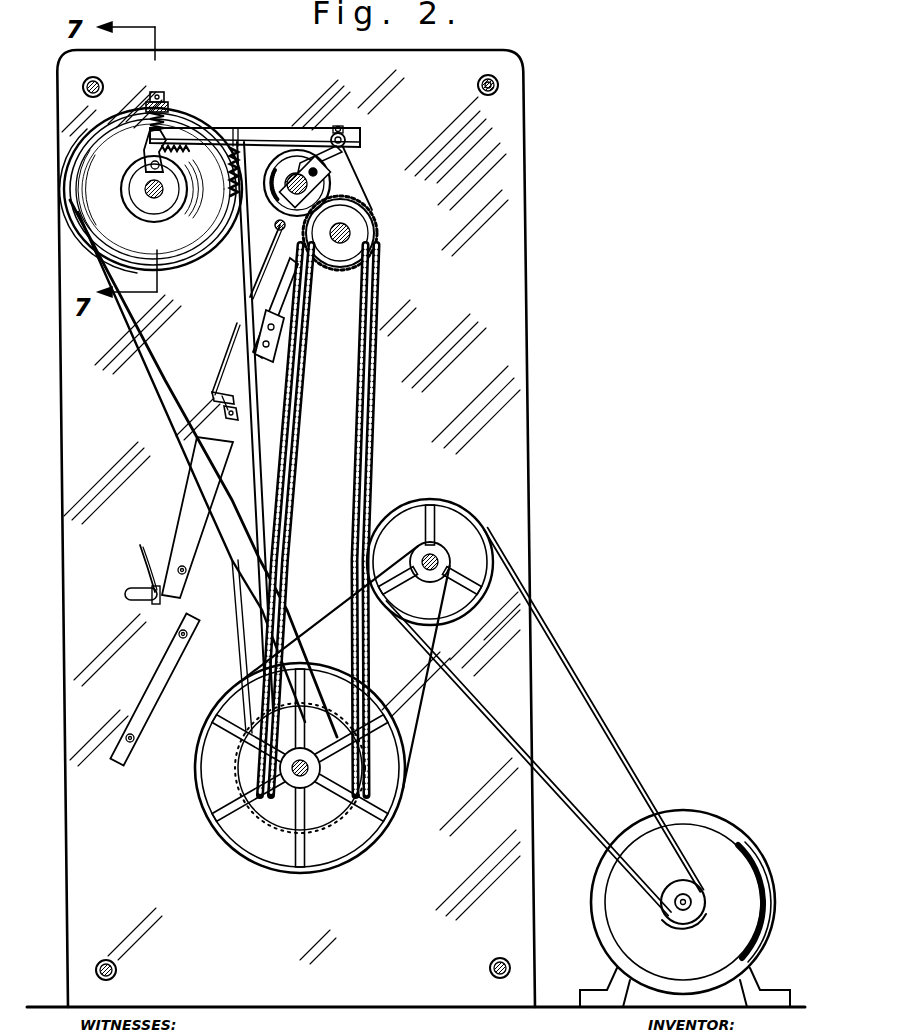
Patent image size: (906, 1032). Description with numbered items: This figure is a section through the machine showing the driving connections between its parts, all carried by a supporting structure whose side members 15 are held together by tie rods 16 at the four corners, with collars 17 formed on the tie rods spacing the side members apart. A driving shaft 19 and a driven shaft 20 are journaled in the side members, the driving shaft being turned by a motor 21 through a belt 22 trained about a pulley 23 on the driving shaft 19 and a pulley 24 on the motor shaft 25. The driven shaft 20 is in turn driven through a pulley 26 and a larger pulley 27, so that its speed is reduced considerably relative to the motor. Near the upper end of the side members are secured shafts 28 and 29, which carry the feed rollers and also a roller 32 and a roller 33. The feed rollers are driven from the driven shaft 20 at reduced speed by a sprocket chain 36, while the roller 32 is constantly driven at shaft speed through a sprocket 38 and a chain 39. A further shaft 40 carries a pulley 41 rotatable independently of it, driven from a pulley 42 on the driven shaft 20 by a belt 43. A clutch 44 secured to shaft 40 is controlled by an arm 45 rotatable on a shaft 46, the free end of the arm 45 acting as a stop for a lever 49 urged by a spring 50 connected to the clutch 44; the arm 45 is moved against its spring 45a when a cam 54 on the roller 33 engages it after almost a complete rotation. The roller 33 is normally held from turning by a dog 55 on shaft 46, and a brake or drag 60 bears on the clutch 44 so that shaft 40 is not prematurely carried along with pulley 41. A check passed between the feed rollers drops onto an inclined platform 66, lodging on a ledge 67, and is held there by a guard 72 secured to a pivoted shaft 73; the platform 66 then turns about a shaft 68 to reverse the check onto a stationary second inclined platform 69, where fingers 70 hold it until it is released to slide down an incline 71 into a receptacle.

The side members 15 is at (512, 480).
The tie rods 16 is at (500, 85).
The collars 17 is at (490, 78).
The driving shaft 19 is at (436, 552).
The driven shaft 20 is at (276, 850).
The motor 21 is at (596, 906).
The belt 22 is at (574, 638).
The pulley 23 is at (470, 522).
The pulley 24 is at (680, 918).
The motor shaft 25 is at (692, 896).
The pulley 26 is at (432, 584).
The pulley 27 is at (385, 812).
The shaft 28 is at (350, 232).
The shaft 29 is at (318, 186).
The roller 32 is at (368, 244).
The roller 33 is at (268, 218).
The sprocket chain 36 is at (378, 392).
The sprocket 38 is at (330, 270).
The chain 39 is at (358, 392).
The shaft 40 is at (150, 196).
The pulley 41 is at (100, 255).
The pulley 42 is at (350, 770).
The belt 43 is at (160, 386).
The clutch 44 is at (178, 197).
The arm 45 is at (232, 128).
The spring 45a is at (262, 152).
The shaft 46 is at (345, 130).
The lever 49 is at (144, 152).
The spring 50 is at (188, 150).
The cam 54 is at (322, 168).
The dog 55 is at (320, 128).
The brake or drag 60 is at (170, 104).
The inclined platform 66 is at (290, 280).
The ledge 67 is at (224, 378).
The shaft 68 is at (225, 423).
The second inclined platform 69 is at (197, 517).
The fingers 70 is at (143, 548).
The incline 71 is at (150, 675).
The guard 72 is at (234, 330).
The shaft 73 is at (274, 262).